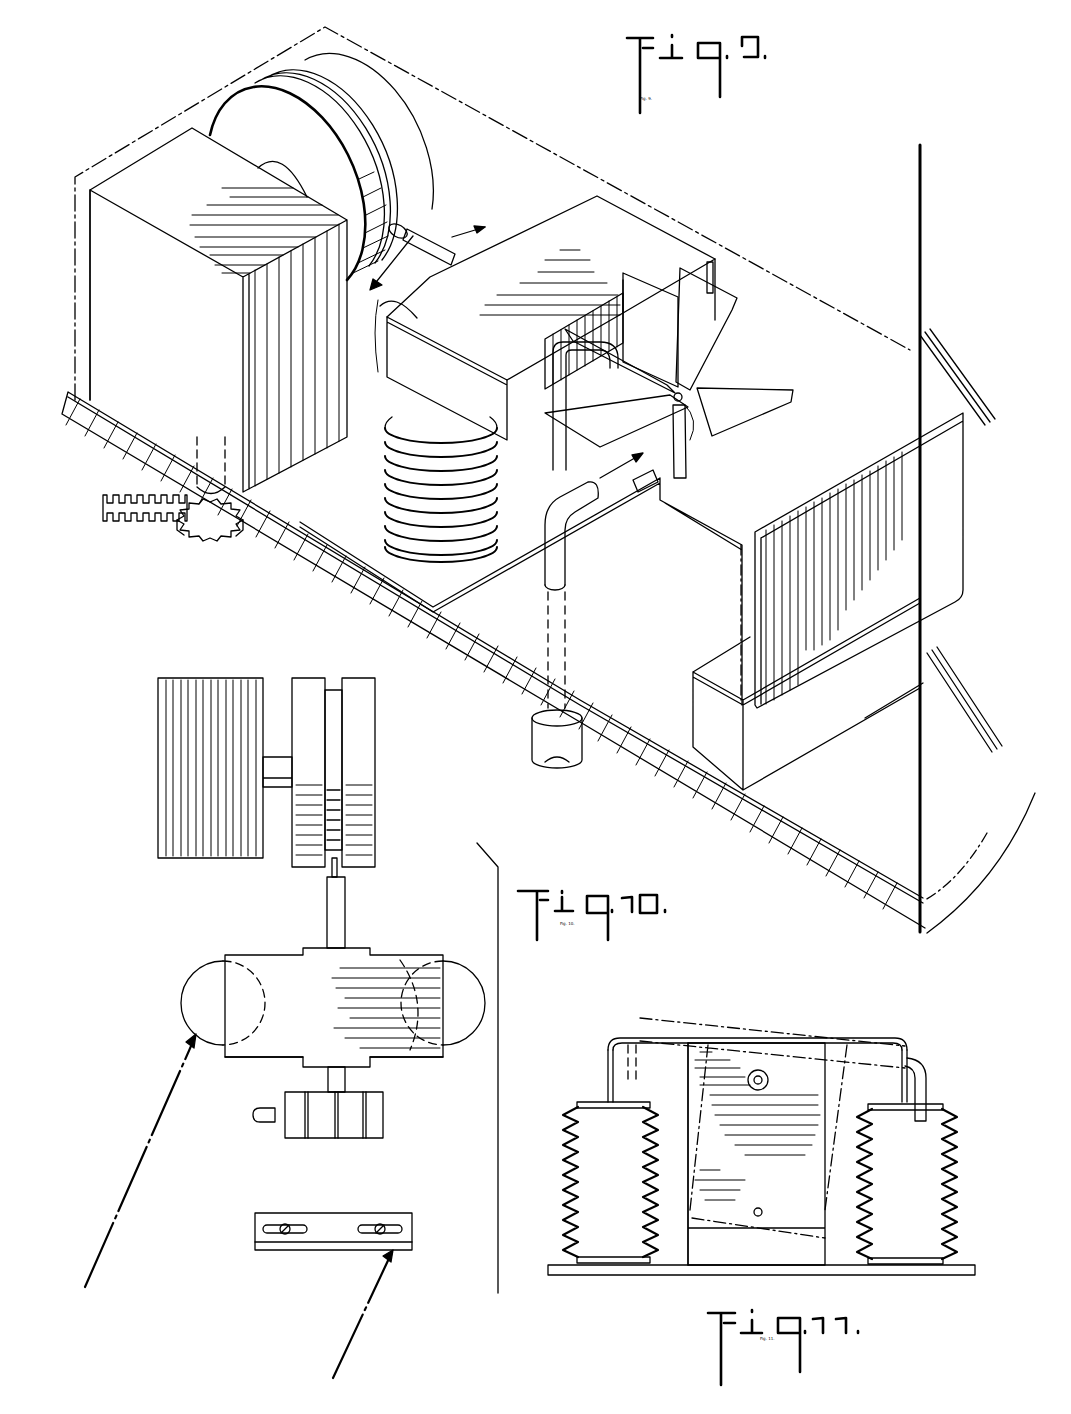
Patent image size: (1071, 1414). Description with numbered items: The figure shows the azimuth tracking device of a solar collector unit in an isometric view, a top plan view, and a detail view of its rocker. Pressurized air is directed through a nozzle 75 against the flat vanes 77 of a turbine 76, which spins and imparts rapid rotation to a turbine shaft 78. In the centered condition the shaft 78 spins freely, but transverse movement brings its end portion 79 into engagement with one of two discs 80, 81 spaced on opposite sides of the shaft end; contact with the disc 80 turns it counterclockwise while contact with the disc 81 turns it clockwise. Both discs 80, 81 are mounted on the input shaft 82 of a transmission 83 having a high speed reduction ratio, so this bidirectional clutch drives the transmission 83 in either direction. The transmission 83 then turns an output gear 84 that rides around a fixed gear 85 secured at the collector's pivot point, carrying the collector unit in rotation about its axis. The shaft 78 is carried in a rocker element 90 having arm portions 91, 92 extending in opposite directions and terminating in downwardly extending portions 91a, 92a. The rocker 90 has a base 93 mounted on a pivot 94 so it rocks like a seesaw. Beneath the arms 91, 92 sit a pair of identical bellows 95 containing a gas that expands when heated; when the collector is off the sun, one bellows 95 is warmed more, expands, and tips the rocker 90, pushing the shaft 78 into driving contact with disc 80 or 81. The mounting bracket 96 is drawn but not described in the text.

In FIG. 9, the nozzle 75 is at (568, 551).
In FIG. 10, the nozzle 75 is at (260, 1122).
In FIG. 10, the turbine 76 is at (396, 1120).
In FIG. 9, the flat vanes 77 is at (740, 348).
In FIG. 9, the turbine shaft 78 is at (430, 242).
In FIG. 10, the turbine shaft 78 is at (346, 918).
In FIG. 11, the turbine shaft 78 is at (769, 1083).
In FIG. 9, the end portion of the shaft 79 is at (407, 200).
In FIG. 10, the end portion of the shaft 79 is at (338, 872).
In FIG. 9, the disc 80 is at (417, 172).
In FIG. 10, the disc 80 is at (375, 683).
In FIG. 9, the disc 81 is at (233, 100).
In FIG. 10, the disc 81 is at (292, 683).
In FIG. 10, the input shaft 82 is at (282, 790).
In FIG. 9, the transmission 83 is at (150, 170).
In FIG. 10, the transmission 83 is at (197, 860).
In FIG. 9, the output gear 84 is at (218, 537).
In FIG. 9, the fixed gear 85 is at (138, 522).
In FIG. 9, the rocker element 90 is at (672, 217).
In FIG. 10, the rocker element 90 is at (414, 950).
In FIG. 11, the rocker element 90 is at (766, 1028).
In FIG. 9, the arm portion 91 is at (386, 336).
In FIG. 10, the arm portion 91 is at (265, 1058).
In FIG. 11, the arm portion 91 is at (612, 1034).
In FIG. 9, the downwardly extending portion 91a is at (390, 392).
In FIG. 11, the downwardly extending portion 91a is at (603, 1042).
In FIG. 9, the arm portion 92 is at (683, 252).
In FIG. 10, the arm portion 92 is at (405, 1058).
In FIG. 11, the arm portion 92 is at (905, 1038).
In FIG. 9, the downwardly extending portion 92a is at (713, 278).
In FIG. 11, the downwardly extending portion 92a is at (906, 1077).
In FIG. 9, the base 93 is at (556, 463).
In FIG. 11, the base 93 is at (688, 1088).
In FIG. 11, the pivot 94 is at (757, 1217).
In FIG. 9, the bellows 95 is at (388, 512).
In FIG. 10, the bellows 95 is at (190, 978).
In FIG. 11, the bellows 95 is at (562, 1150).
In FIG. 10, the mounting bracket 96 is at (323, 1252).